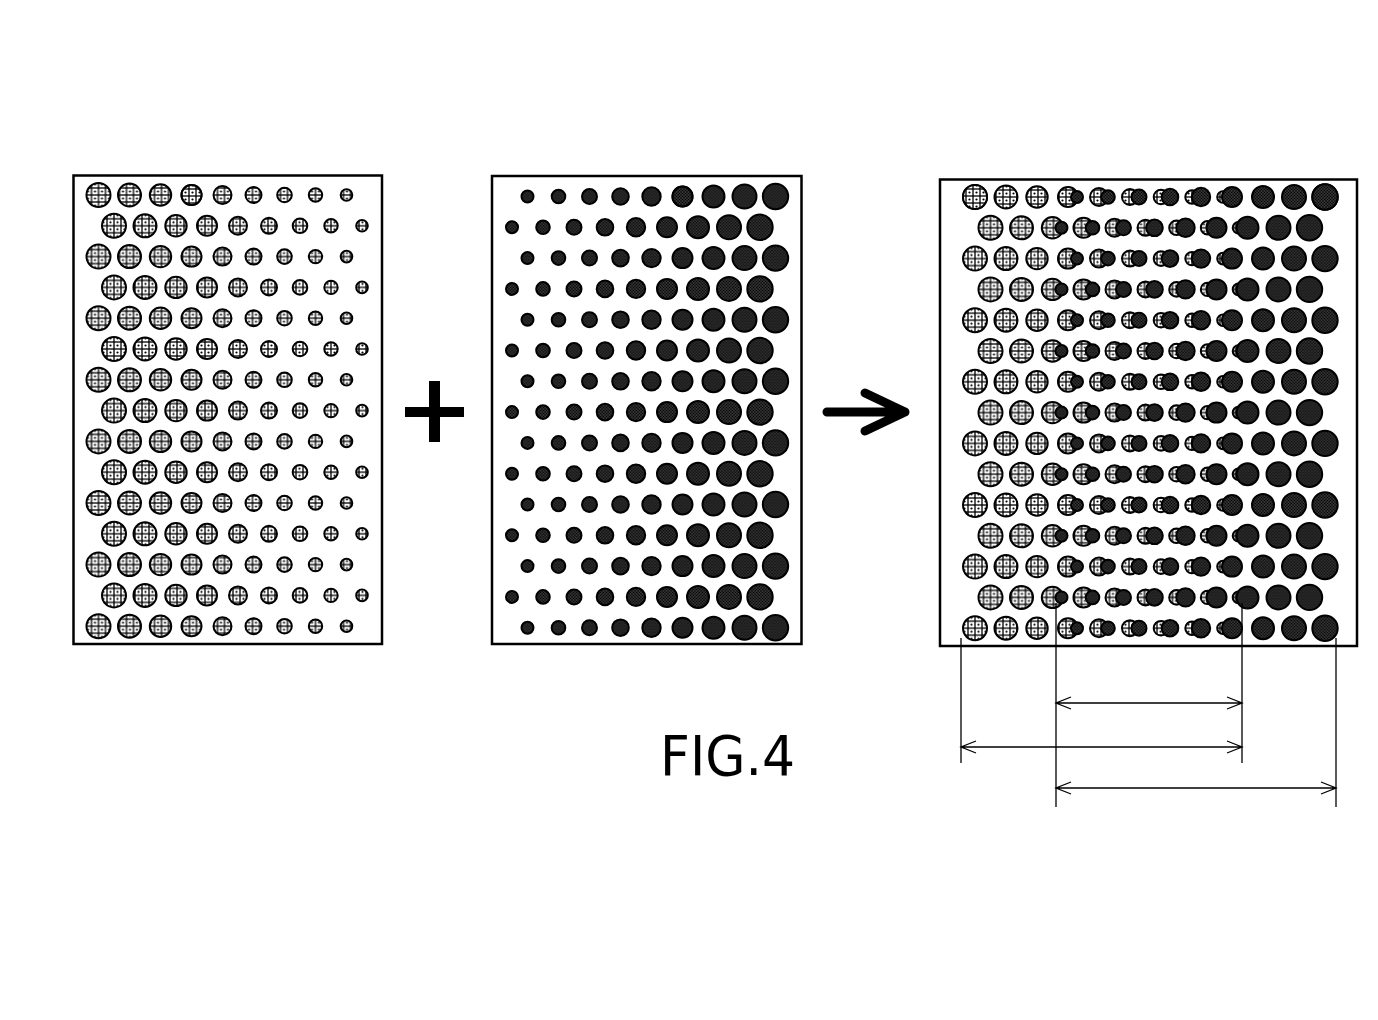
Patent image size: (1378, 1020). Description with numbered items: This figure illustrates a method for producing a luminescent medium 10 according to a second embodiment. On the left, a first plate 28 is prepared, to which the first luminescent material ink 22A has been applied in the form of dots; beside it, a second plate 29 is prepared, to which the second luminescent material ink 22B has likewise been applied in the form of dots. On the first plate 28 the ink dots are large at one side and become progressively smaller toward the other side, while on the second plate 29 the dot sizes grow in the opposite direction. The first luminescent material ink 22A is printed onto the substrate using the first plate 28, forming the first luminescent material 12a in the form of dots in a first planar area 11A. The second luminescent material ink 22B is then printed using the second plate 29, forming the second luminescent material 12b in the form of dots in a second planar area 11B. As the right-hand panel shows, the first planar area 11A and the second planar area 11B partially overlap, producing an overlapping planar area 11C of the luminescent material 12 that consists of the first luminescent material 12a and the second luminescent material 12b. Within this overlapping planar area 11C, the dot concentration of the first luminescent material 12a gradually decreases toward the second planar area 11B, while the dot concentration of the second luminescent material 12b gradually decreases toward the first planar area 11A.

The printed image 10 is at (1154, 337).
The luminescent material 12 is at (1068, 88).
The first luminescent material 12a is at (975, 186).
The second luminescent material 12b is at (1324, 186).
The first luminescent material ink 22A is at (97, 190).
The second luminescent material ink 22B is at (773, 188).
The first plate 28 is at (207, 188).
The second plate 29 is at (665, 188).
The first planar area 11A is at (1101, 709).
The second planar area 11B is at (1196, 730).
The overlapping planar area 11C is at (1149, 705).